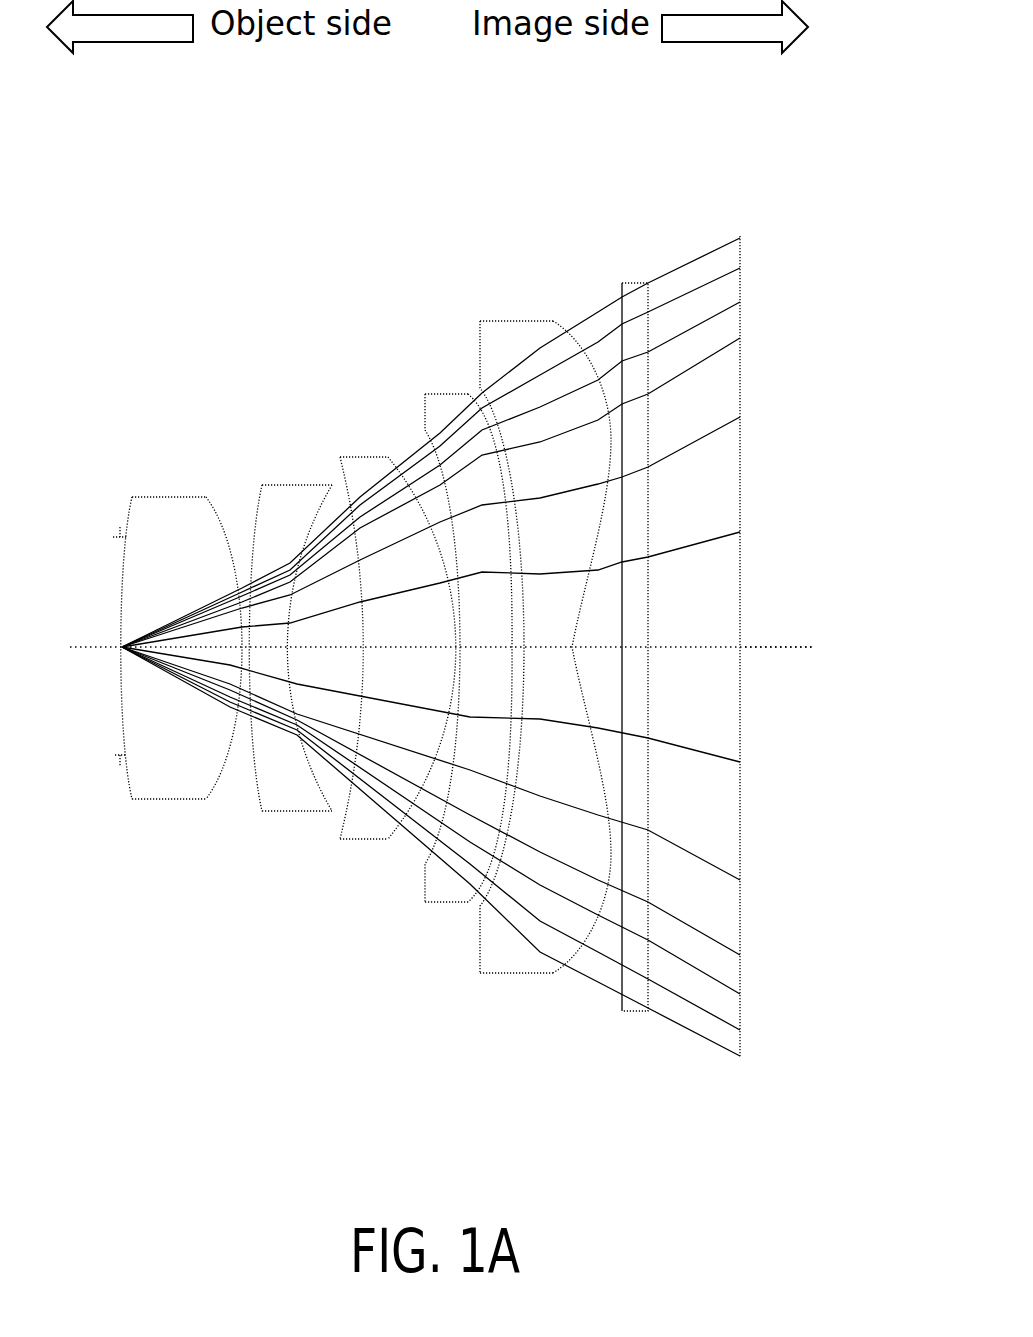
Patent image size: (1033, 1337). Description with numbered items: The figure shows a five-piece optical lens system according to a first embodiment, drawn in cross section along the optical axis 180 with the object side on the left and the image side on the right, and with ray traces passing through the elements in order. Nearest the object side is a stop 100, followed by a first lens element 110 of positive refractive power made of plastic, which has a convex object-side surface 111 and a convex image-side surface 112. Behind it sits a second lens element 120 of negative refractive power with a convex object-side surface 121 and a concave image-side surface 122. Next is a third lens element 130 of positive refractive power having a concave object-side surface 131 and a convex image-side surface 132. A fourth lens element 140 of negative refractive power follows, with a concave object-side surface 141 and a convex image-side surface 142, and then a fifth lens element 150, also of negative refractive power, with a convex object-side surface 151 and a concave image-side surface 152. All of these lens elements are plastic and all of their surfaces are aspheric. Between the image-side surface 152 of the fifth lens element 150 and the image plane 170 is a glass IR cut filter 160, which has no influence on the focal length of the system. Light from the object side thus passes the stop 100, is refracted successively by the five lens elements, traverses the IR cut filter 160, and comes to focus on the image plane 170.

The stop 100 is at (117, 531).
The first lens element 110 is at (150, 626).
The object-side surface 111 is at (122, 685).
The image-side surface 112 is at (228, 757).
The second lens element 120 is at (272, 621).
The object-side surface 121 is at (252, 747).
The image-side surface 122 is at (333, 776).
The third lens element 130 is at (377, 640).
The object-side surface 131 is at (345, 796).
The image-side surface 132 is at (445, 737).
The fourth lens element 140 is at (451, 664).
The object-side surface 141 is at (457, 808).
The image-side surface 142 is at (505, 823).
The fifth lens element 150 is at (518, 629).
The object-side surface 151 is at (497, 880).
The image-side surface 152 is at (591, 934).
The IR cut filter 160 is at (635, 290).
The image plane 170 is at (738, 272).
The optical axis 180 is at (762, 647).